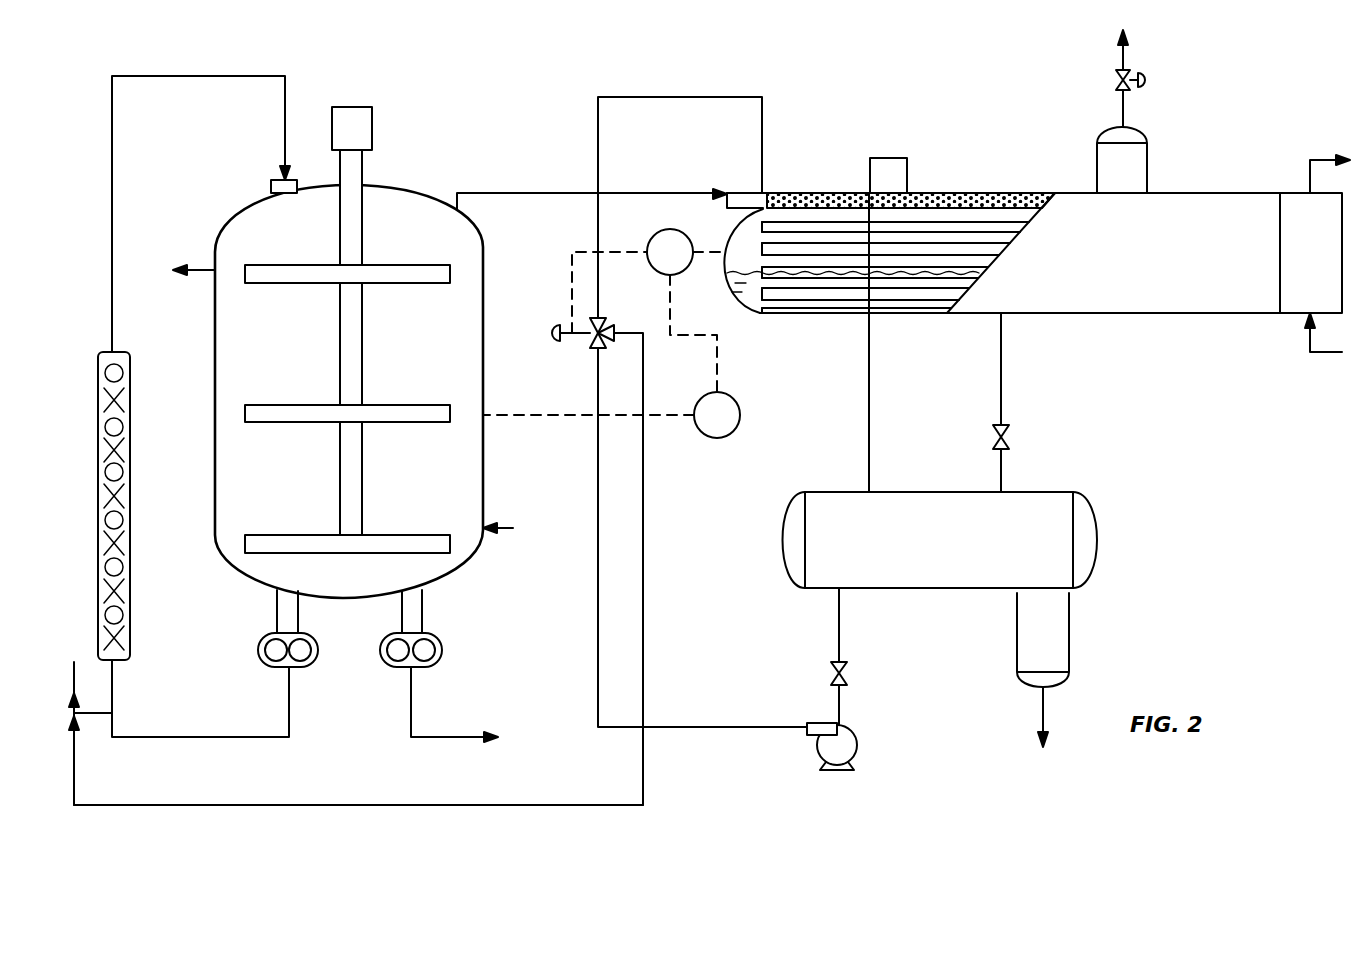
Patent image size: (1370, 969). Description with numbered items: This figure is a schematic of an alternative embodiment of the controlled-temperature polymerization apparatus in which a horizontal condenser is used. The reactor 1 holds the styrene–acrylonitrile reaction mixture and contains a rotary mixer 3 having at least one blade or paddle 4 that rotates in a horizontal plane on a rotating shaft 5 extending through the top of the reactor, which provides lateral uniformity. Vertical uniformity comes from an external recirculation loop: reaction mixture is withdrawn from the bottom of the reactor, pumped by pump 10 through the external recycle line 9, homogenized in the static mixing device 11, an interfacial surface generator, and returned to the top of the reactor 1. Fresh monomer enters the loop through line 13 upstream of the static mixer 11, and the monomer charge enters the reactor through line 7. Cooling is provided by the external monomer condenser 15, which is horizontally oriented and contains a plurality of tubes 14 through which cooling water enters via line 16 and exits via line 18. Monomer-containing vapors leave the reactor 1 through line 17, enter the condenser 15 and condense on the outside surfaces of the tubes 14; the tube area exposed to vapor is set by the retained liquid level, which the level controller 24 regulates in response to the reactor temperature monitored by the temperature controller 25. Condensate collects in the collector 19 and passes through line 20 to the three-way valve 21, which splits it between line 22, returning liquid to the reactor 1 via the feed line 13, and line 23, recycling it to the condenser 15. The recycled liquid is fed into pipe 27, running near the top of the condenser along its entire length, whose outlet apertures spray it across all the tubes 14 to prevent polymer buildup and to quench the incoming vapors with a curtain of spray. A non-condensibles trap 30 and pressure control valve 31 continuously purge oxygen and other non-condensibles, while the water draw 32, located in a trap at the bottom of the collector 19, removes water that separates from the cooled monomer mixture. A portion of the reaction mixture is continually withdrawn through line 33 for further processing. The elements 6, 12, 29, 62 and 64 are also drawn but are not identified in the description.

The reactor 1 is at (262, 354).
The rotary mixer 3 is at (347, 351).
The blade or paddle 4 is at (440, 284).
The rotating shaft 5 is at (356, 234).
The vent lines 6 is at (200, 272).
The line 7 is at (284, 148).
The external recycle line 9 is at (196, 737).
The pump 10 is at (263, 665).
The mixing device 11 is at (130, 440).
The agitator motor 12 is at (364, 142).
The line 13 is at (74, 670).
The tubes 14 is at (933, 292).
The condenser 15 is at (1083, 272).
The line 16 is at (1334, 352).
The line 17 is at (538, 193).
The line 18 is at (1334, 160).
The collector 19 is at (917, 562).
The line 20 is at (641, 583).
The three-way valve 21 is at (591, 340).
The line 22 is at (222, 805).
The line 23 is at (600, 172).
The level controller 24 is at (657, 266).
The temperature controller 25 is at (704, 429).
The pipe 27 is at (843, 192).
The circulating pump 29 is at (852, 740).
The non-condensibles trap 30 is at (1109, 184).
The pressure control valve 31 is at (1116, 78).
The water draw 32 is at (1056, 629).
The line 33 is at (440, 737).
The condensate return pipe 62 is at (868, 388).
The drain line 64 is at (1001, 358).